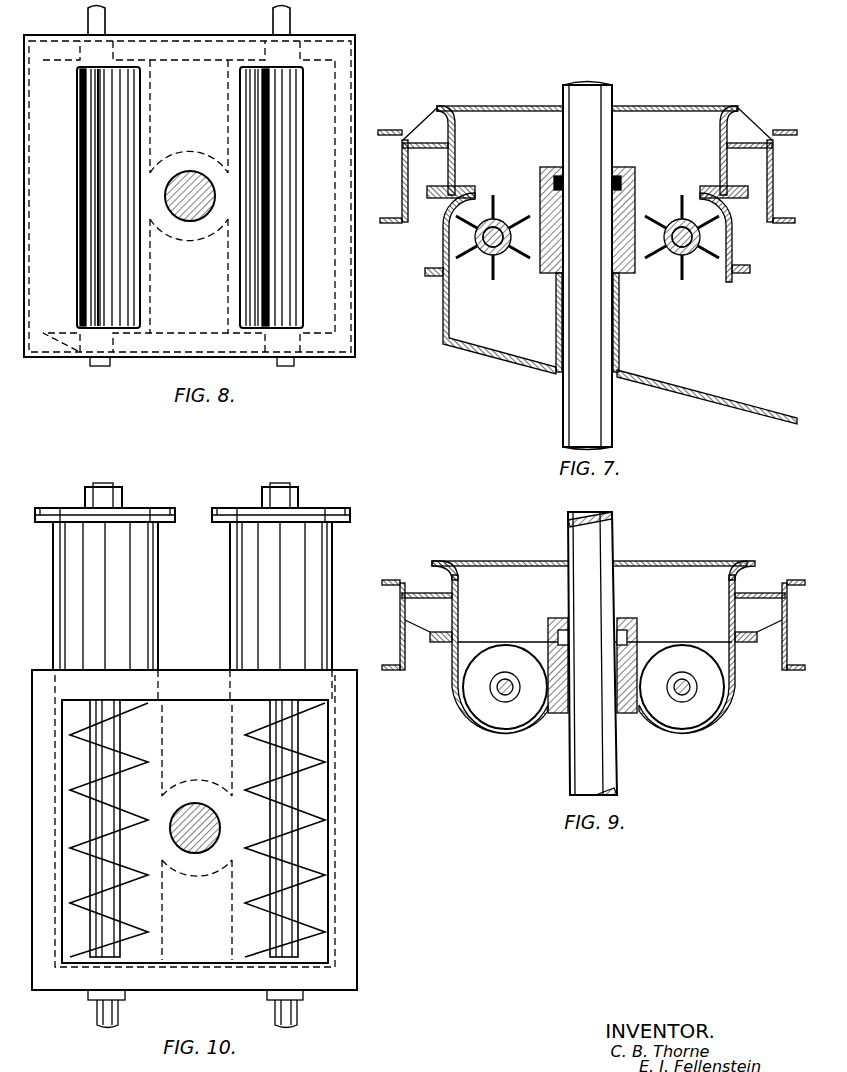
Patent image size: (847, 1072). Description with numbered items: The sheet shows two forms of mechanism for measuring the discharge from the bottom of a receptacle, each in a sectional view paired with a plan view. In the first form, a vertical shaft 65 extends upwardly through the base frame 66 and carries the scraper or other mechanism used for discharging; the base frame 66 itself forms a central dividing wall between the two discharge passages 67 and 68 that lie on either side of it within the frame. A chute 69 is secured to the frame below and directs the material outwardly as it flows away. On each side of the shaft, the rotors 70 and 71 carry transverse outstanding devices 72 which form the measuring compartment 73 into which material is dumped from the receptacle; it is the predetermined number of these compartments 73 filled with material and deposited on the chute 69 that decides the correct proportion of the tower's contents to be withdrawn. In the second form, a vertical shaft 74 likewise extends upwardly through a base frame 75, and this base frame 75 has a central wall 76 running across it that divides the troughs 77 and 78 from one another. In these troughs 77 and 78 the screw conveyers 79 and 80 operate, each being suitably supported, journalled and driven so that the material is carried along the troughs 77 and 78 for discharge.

In FIG. 8, the vertical shaft 65 is at (190, 222).
In FIG. 7, the vertical shaft 65 is at (588, 393).
In FIG. 8, the base frame 66 is at (172, 85).
In FIG. 7, the base frame 66 is at (634, 167).
In FIG. 7, the discharge passage 67 is at (505, 178).
In FIG. 7, the discharge passage 68 is at (657, 178).
In FIG. 7, the chute 69 is at (720, 405).
In FIG. 8, the rotor 70 is at (83, 70).
In FIG. 7, the rotor 70 is at (490, 260).
In FIG. 8, the rotor 71 is at (272, 80).
In FIG. 7, the rotor 71 is at (690, 262).
In FIG. 8, the transverse outstanding device 72 is at (98, 160).
In FIG. 7, the transverse outstanding device 72 is at (494, 198).
In FIG. 7, the measuring compartment 73 is at (508, 210).
In FIG. 9, the vertical shaft 74 is at (594, 562).
In FIG. 10, the vertical shaft 74 is at (195, 806).
In FIG. 9, the base frame 75 is at (634, 715).
In FIG. 9, the central wall 76 is at (638, 642).
In FIG. 10, the central wall 76 is at (182, 712).
In FIG. 9, the trough 77 is at (503, 636).
In FIG. 9, the trough 78 is at (695, 638).
In FIG. 9, the screw conveyer 79 is at (492, 690).
In FIG. 10, the screw conveyer 79 is at (97, 850).
In FIG. 9, the screw conveyer 80 is at (715, 665).
In FIG. 10, the screw conveyer 80 is at (303, 923).